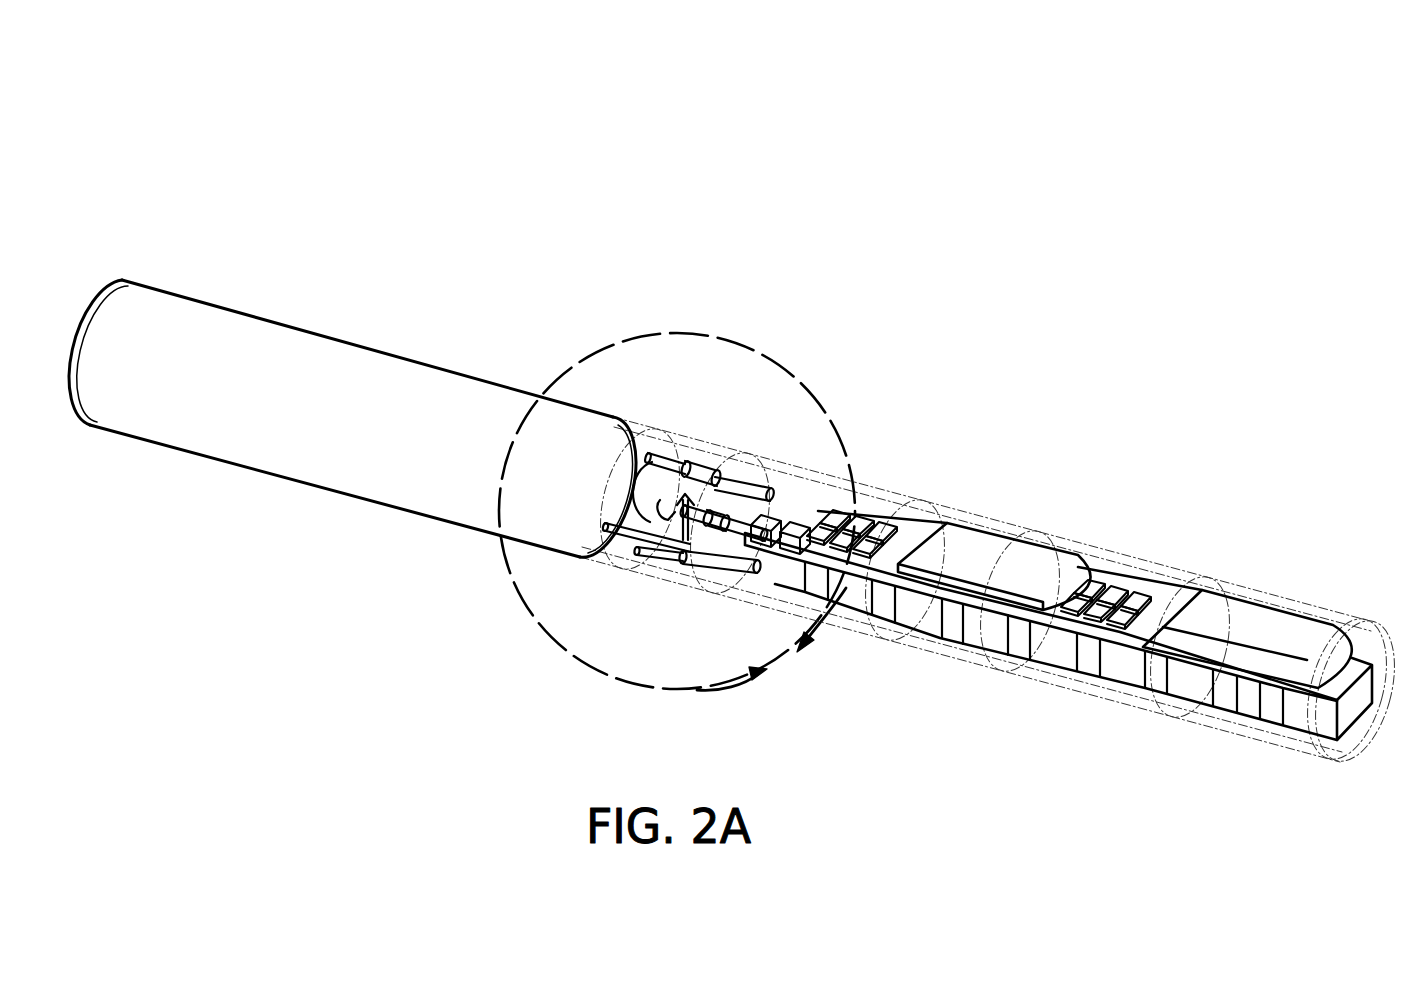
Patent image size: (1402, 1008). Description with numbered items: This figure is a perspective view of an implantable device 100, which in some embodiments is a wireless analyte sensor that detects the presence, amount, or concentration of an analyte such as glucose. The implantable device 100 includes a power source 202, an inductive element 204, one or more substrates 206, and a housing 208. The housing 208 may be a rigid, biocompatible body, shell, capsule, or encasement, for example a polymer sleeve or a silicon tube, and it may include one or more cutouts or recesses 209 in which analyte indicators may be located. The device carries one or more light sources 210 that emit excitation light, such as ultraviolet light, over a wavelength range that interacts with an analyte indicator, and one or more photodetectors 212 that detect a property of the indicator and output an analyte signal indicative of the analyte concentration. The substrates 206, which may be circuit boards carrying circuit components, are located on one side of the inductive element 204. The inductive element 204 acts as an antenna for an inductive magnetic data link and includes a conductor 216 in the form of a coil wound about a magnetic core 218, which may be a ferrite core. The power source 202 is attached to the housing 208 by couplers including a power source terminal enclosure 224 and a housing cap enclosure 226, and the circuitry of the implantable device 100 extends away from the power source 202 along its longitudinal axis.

The implantable device 100 is at (517, 190).
The power source 202 is at (292, 470).
The inductive element 204 is at (972, 640).
The substrates 206 is at (880, 568).
The housing 208 is at (1340, 620).
The cutouts or recesses 209 is at (1087, 550).
The light sources 210 is at (868, 523).
The photodetectors 212 is at (880, 533).
The conductor 216 is at (1088, 655).
The magnetic core 218 is at (1302, 712).
The power source terminal enclosure 224 is at (657, 435).
The housing cap enclosure 226 is at (722, 452).